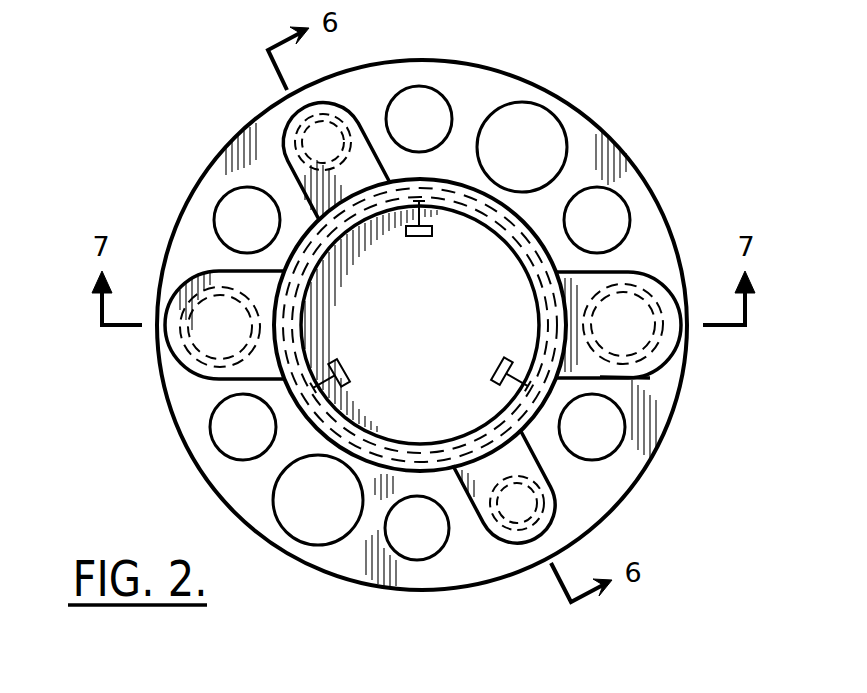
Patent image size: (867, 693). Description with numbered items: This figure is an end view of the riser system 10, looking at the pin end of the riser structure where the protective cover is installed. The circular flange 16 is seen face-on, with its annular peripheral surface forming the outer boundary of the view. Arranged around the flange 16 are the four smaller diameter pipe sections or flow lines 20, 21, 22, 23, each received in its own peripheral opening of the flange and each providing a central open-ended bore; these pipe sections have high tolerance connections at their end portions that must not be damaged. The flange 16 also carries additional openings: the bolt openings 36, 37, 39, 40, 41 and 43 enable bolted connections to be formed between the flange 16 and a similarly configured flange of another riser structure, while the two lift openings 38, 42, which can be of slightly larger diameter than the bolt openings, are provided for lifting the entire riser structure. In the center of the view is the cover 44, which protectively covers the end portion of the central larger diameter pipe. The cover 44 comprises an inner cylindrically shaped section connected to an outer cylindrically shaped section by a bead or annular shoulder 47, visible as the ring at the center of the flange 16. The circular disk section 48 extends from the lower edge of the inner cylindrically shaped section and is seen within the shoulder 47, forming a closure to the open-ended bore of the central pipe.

The riser system 10 is at (693, 157).
The circular flange 16 is at (493, 557).
The smaller diameter pipe section 20 is at (176, 377).
The smaller diameter pipe section 21 is at (300, 128).
The smaller diameter pipe section 22 is at (645, 272).
The smaller diameter pipe section 23 is at (540, 492).
The bolt opening 36 is at (236, 214).
The bolt opening 37 is at (423, 112).
The lift opening 38 is at (537, 128).
The bolt opening 39 is at (612, 215).
The bolt opening 40 is at (610, 424).
The bolt opening 41 is at (415, 545).
The lift opening 42 is at (320, 528).
The bolt opening 43 is at (230, 425).
The cover 44 is at (660, 360).
The annular shoulder 47 is at (525, 215).
The circular disk section 48 is at (439, 319).